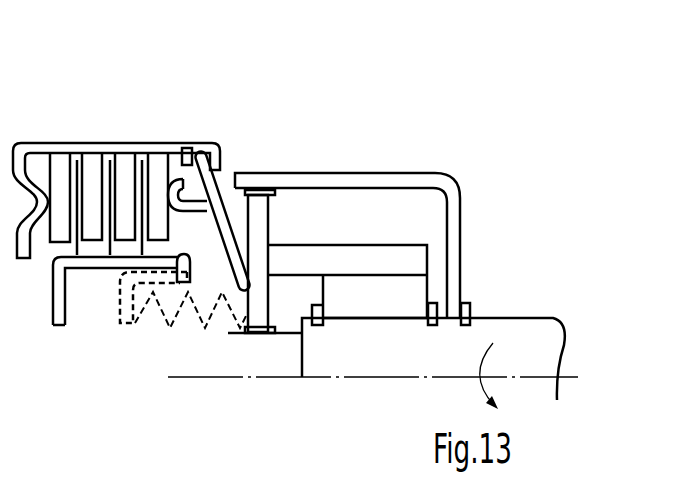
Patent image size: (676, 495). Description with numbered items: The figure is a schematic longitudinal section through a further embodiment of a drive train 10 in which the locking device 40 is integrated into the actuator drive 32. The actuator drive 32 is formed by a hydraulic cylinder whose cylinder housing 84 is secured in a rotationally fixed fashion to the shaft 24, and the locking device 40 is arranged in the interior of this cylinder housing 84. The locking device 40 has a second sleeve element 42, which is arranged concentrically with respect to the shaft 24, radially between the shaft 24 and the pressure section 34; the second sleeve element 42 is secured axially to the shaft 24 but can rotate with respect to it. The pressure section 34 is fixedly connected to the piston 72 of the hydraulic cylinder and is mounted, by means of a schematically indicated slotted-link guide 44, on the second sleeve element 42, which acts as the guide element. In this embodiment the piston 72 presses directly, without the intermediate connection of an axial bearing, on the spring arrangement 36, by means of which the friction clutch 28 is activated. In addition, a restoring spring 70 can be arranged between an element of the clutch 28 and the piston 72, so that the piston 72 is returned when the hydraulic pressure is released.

The drive train 10 is at (487, 142).
The shaft 24 is at (270, 358).
The friction clutch 28 is at (117, 176).
The actuator drive 32 is at (359, 146).
The pressure section 34 is at (407, 265).
The spring arrangement 36 is at (227, 238).
The locking device 40 is at (393, 210).
The second sleeve element 42 is at (398, 288).
The slotted-link guide 44 is at (360, 277).
The restoring spring 70 is at (160, 312).
The piston 72 is at (254, 222).
The cylinder housing 84 is at (455, 186).